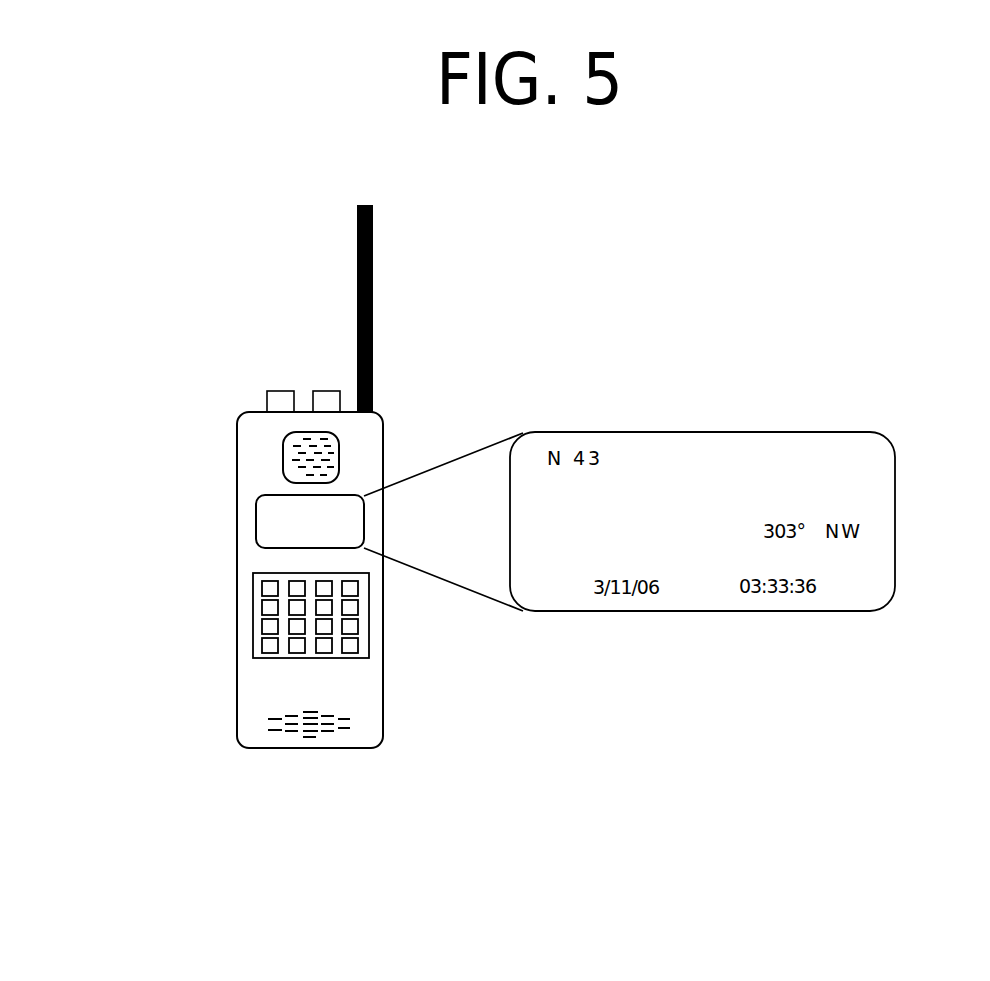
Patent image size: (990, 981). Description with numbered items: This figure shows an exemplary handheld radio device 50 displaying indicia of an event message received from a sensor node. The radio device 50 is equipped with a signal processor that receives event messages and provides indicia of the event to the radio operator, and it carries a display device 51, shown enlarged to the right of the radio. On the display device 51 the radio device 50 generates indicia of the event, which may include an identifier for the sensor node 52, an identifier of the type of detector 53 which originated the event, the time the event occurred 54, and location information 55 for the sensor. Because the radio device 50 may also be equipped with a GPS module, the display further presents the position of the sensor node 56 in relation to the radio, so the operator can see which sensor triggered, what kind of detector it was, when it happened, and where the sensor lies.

The radio device 50 is at (383, 435).
The display device 51 is at (256, 535).
The identifier for the sensor node 52 is at (545, 534).
The identifier of the type of detector 53 is at (545, 503).
The time the event occurred 54 is at (740, 611).
The location information for the sensor 55 is at (767, 440).
The position of the sensor node in relation to the radio 56 is at (863, 505).